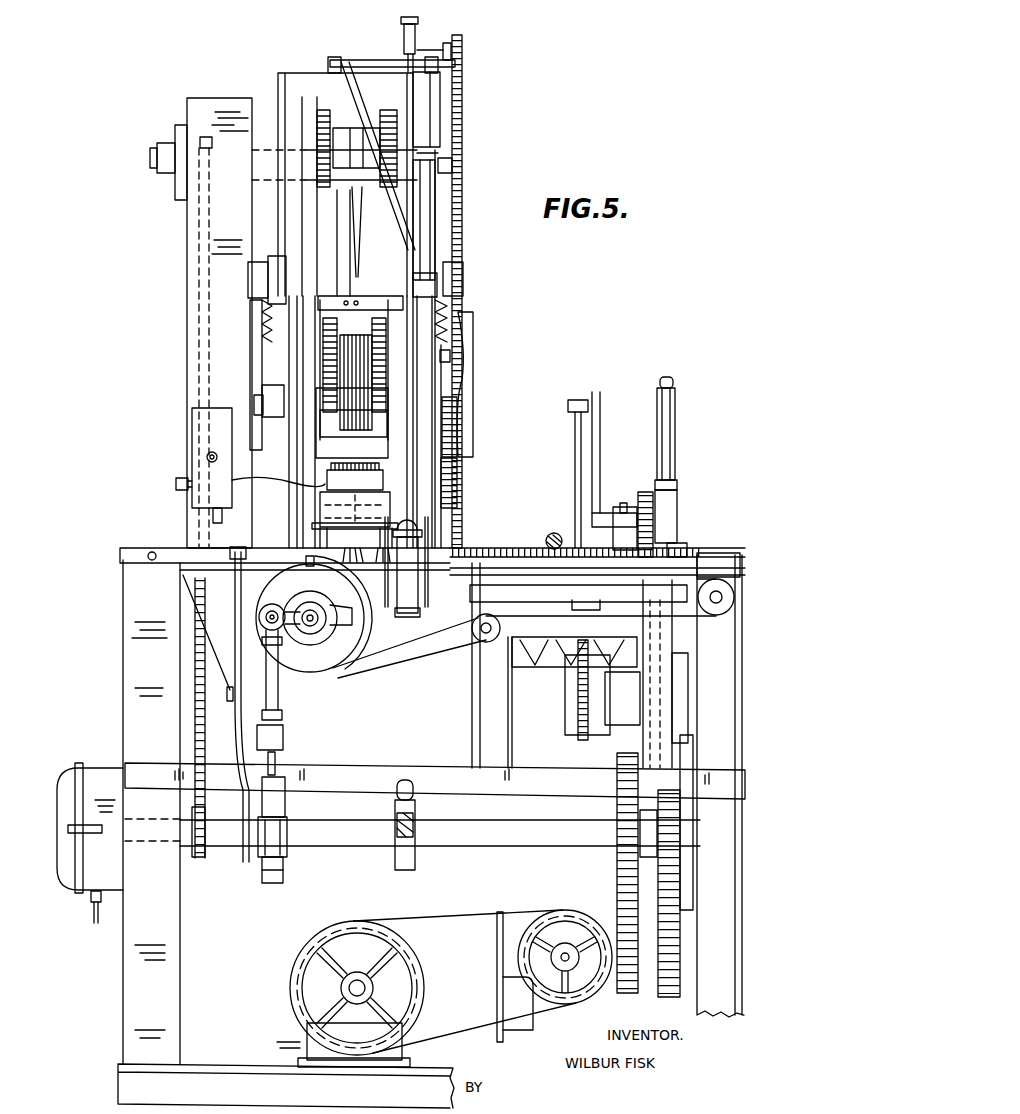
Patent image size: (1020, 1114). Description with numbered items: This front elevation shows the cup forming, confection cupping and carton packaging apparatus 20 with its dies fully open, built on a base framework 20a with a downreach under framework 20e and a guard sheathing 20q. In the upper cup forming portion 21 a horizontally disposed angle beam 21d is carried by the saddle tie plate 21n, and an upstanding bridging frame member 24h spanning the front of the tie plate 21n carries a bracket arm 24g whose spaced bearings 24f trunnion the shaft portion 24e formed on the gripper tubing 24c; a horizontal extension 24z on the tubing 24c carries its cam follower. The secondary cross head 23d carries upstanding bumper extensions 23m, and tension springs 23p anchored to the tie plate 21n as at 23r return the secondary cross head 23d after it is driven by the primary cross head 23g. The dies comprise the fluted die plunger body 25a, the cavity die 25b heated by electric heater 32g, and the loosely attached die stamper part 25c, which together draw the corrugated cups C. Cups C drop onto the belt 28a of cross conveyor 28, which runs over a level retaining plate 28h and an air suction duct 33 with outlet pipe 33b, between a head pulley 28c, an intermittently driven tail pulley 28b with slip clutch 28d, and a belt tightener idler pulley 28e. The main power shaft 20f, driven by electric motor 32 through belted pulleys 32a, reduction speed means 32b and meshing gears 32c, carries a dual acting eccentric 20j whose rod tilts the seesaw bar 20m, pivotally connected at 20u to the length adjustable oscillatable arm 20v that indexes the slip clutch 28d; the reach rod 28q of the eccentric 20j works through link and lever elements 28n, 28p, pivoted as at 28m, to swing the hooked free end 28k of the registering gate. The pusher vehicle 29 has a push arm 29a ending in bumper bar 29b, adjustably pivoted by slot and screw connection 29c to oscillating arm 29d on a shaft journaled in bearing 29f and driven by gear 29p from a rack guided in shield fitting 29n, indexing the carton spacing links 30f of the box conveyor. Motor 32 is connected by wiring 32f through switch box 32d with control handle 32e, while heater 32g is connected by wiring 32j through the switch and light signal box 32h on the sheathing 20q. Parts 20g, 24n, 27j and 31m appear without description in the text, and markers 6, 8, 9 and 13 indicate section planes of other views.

The cup forming, confection cupping and carton packaging apparatus 20 is at (150, 132).
The base framework 20a is at (128, 608).
The under framework 20e is at (228, 672).
The main power shaft 20f is at (326, 848).
The worm gear 20g is at (397, 858).
The dual acting eccentric 20j is at (258, 868).
The seesaw bar 20m is at (277, 762).
The guard sheathing 20q is at (137, 928).
The pivotal connection 20u is at (284, 738).
The length adjustable oscillatable arm 20v is at (282, 715).
The cup forming portion 21 is at (256, 420).
The angle beam 21d is at (262, 310).
The saddle tie plate 21n is at (262, 264).
The secondary cross head 23d is at (458, 424).
The primary cross head 23g is at (451, 358).
The bumper extensions 23m is at (470, 383).
The tension springs 23p is at (450, 318).
The spring anchorage 23r is at (463, 274).
The tubing 24c is at (440, 100).
The shaft portion 24e is at (392, 44).
The bearings 24f is at (330, 63).
The bracket arm 24g is at (452, 50).
The bridging frame member 24h is at (278, 92).
The stop 24n is at (454, 160).
The horizontal extension 24z is at (435, 172).
The die plunger body 25a is at (352, 388).
The cavity die 25b is at (322, 482).
The die stamper part 25c is at (353, 436).
The gear 27j is at (480, 505).
The cross conveyor 28 is at (405, 652).
The conveyor belt 28a is at (575, 614).
The tail pulley 28b is at (322, 655).
The head pulley 28c is at (717, 616).
The slip clutch 28d is at (298, 650).
The belt tightener idler pulley 28e is at (478, 643).
The level retaining plate 28h is at (438, 562).
The hooked free end 28k is at (313, 564).
The gate pivot 28m is at (320, 550).
The link element 28n is at (228, 553).
The lever element 28p is at (232, 737).
The reach rod 28q is at (243, 864).
The pusher vehicle 29 is at (597, 432).
The push arm 29a is at (576, 440).
The bumper bar 29b is at (655, 565).
The slot and screw connection 29c is at (568, 406).
The oscillating arm 29d is at (601, 455).
The bearing 29f is at (622, 505).
The shield fitting 29n is at (676, 426).
The gear 29p is at (660, 503).
The carton spacing link 30f is at (582, 690).
The pin 31m is at (547, 541).
The electric motor 32 is at (305, 952).
The belted pulleys 32a is at (518, 978).
The reduction speed means 32b is at (566, 930).
The meshing gears 32c is at (617, 918).
The switch box 32d is at (70, 782).
The control handle 32e is at (68, 829).
The wiring 32f is at (91, 905).
The electric heater 32g is at (385, 485).
The switch and light signal box 32h is at (210, 433).
The wiring 32j is at (176, 484).
The air suction duct 33 is at (470, 614).
The outlet pipe 33b is at (593, 597).
The corrugated cups C is at (350, 612).
The section line 6 is at (495, 330).
The section line 8 is at (357, 18).
The section line 9 is at (438, 18).
The section line 13 is at (378, 225).